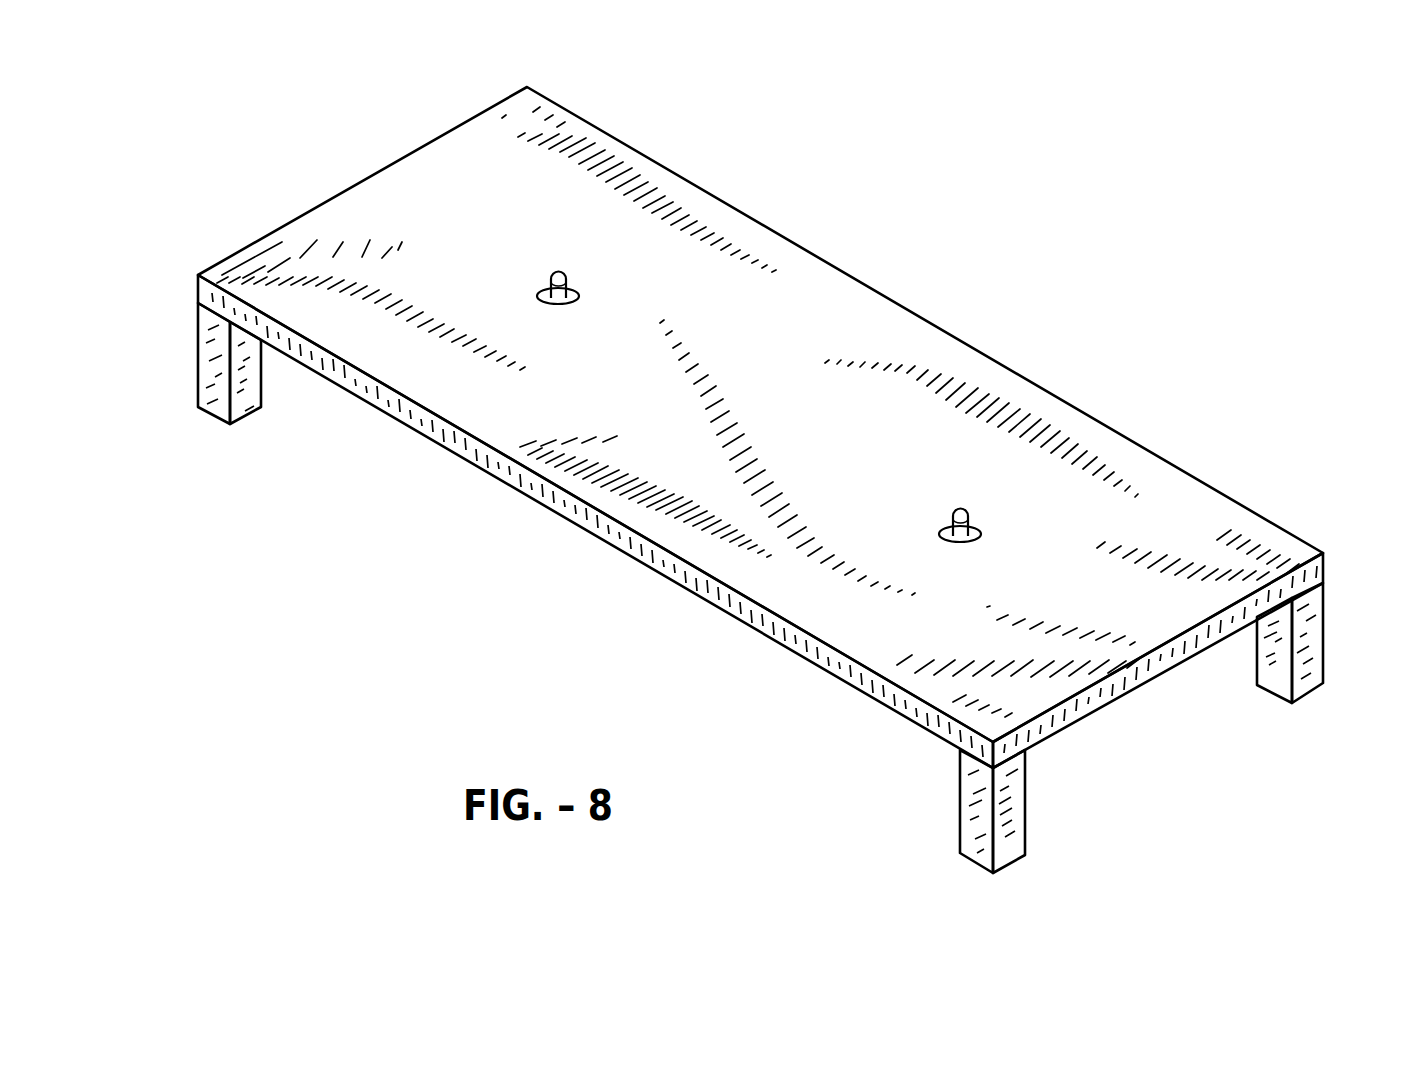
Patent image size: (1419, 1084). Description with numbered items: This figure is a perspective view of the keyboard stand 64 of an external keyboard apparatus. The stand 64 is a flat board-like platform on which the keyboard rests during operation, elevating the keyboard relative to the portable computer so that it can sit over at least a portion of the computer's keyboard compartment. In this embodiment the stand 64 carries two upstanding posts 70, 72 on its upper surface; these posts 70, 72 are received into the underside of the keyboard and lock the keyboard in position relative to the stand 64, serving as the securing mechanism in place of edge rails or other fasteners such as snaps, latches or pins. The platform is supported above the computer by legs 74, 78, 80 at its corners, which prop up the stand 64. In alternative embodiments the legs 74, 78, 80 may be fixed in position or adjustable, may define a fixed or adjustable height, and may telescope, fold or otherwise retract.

The keyboard stand 64 is at (1045, 225).
The post 70 is at (552, 276).
The post 72 is at (957, 511).
The leg 74 is at (1313, 640).
The leg 78 is at (210, 375).
The leg 80 is at (1020, 815).